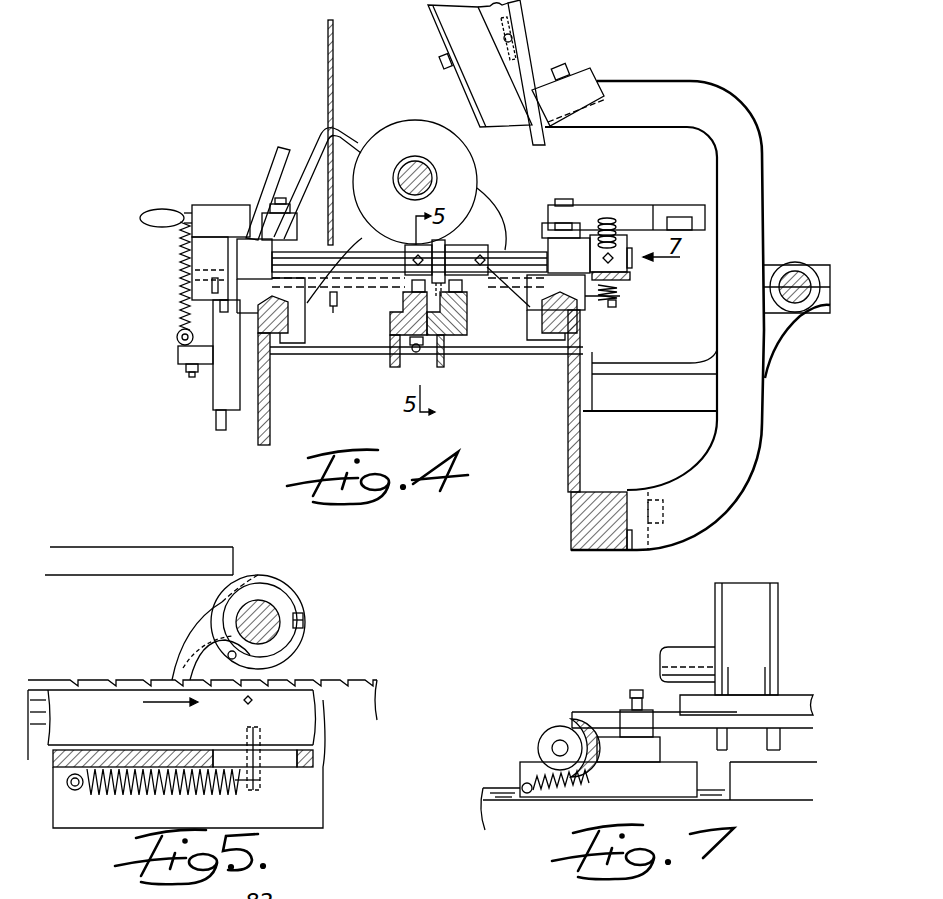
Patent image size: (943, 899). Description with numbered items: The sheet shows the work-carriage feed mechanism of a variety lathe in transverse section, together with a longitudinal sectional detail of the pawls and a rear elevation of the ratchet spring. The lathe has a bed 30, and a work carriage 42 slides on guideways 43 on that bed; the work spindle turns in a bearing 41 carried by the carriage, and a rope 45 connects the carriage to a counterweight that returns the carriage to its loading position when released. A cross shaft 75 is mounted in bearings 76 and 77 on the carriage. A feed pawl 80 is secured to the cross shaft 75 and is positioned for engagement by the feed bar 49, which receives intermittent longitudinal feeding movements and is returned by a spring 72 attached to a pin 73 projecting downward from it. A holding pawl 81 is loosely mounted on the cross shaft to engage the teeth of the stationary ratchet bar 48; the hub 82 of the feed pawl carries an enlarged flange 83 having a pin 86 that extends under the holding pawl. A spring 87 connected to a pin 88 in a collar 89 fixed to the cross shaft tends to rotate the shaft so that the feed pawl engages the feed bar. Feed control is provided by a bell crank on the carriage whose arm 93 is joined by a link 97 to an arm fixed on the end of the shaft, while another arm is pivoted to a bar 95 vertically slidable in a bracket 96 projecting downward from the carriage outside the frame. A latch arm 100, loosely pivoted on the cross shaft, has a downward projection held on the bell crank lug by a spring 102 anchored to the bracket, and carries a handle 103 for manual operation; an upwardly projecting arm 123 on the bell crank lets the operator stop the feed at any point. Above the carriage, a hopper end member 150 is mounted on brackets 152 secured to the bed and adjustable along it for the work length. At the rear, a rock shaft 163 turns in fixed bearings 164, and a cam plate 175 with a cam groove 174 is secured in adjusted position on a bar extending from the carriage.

In FIG. 4, the bed 30 is at (270, 414).
In FIG. 4, the bearing 41 is at (409, 127).
In FIG. 7, the bearing 41 is at (770, 582).
In FIG. 4, the work carriage 42 is at (576, 303).
In FIG. 4, the guideways 43 is at (420, 309).
In FIG. 5, the guideways 43 is at (53, 700).
In FIG. 7, the guideways 43 is at (487, 796).
In FIG. 4, the rope 45 is at (328, 112).
In FIG. 4, the stationary ratchet bar 48 is at (468, 320).
In FIG. 5, the stationary ratchet bar 48 is at (372, 700).
In FIG. 4, the feed bar 49 is at (396, 310).
In FIG. 5, the feed bar 49 is at (313, 726).
In FIG. 4, the spring 72 is at (417, 353).
In FIG. 5, the spring 72 is at (178, 796).
In FIG. 5, the pin 73 is at (255, 790).
In FIG. 4, the cross shaft 75 is at (356, 249).
In FIG. 5, the cross shaft 75 is at (262, 610).
In FIG. 7, the cross shaft 75 is at (556, 748).
In FIG. 4, the bearing 76 is at (255, 276).
In FIG. 4, the bearing 77 is at (569, 255).
In FIG. 4, the feed pawl 80 is at (410, 290).
In FIG. 5, the feed pawl 80 is at (185, 648).
In FIG. 4, the holding pawl 81 is at (458, 286).
In FIG. 5, the holding pawl 81 is at (198, 617).
In FIG. 4, the hub 82 is at (412, 247).
In FIG. 5, the hub 82 is at (280, 610).
In FIG. 4, the enlarged flange 83 is at (437, 260).
In FIG. 5, the enlarged flange 83 is at (300, 636).
In FIG. 5, the pin 86 is at (216, 668).
In FIG. 4, the spring 87 is at (606, 215).
In FIG. 7, the spring 87 is at (587, 766).
In FIG. 7, the pin 88 is at (572, 716).
In FIG. 4, the collar 89 is at (626, 280).
In FIG. 7, the collar 89 is at (554, 738).
In FIG. 4, the arm 93 is at (206, 294).
In FIG. 4, the bar 95 is at (216, 428).
In FIG. 4, the bracket 96 is at (232, 379).
In FIG. 4, the link 97 is at (220, 312).
In FIG. 4, the latch arm 100 is at (217, 200).
In FIG. 4, the spring 102 is at (179, 302).
In FIG. 4, the handle 103 is at (150, 218).
In FIG. 4, the arm 123 is at (272, 161).
In FIG. 4, the end member 150 is at (448, 40).
In FIG. 4, the brackets 152 is at (747, 152).
In FIG. 4, the rock shaft 163 is at (817, 257).
In FIG. 4, the fixed bearings 164 is at (821, 315).
In FIG. 4, the cam groove 174 is at (702, 198).
In FIG. 4, the cam plate 175 is at (592, 196).